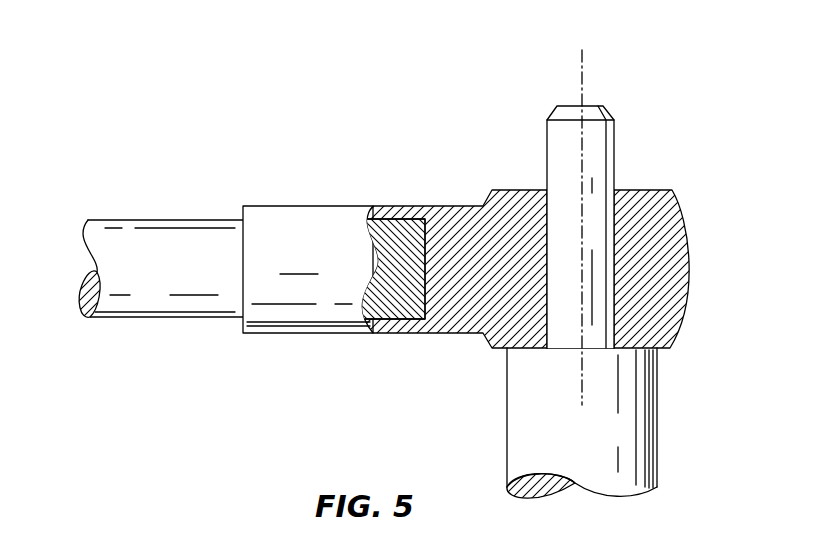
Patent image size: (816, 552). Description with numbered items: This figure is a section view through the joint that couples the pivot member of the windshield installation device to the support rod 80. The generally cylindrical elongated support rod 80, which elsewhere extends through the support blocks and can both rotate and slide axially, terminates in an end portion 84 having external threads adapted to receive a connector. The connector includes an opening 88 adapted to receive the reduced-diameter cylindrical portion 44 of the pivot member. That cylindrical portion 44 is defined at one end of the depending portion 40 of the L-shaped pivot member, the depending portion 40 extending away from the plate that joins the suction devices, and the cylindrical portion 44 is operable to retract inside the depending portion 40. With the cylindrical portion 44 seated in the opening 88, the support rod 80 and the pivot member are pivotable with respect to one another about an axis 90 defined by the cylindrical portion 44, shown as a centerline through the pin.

The depending portion 40 is at (657, 412).
The reduced-diameter cylindrical portion 44 is at (616, 152).
The support rod 80 is at (183, 235).
The end portion 84 is at (678, 279).
The opening 88 is at (548, 266).
The axis 90 is at (583, 80).